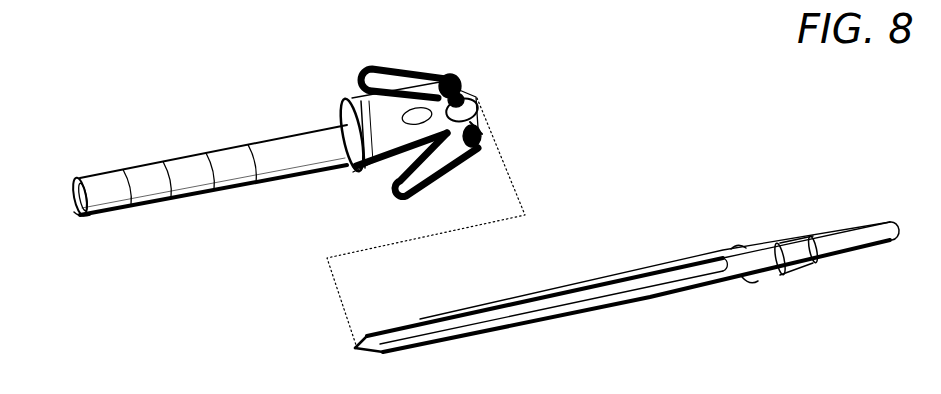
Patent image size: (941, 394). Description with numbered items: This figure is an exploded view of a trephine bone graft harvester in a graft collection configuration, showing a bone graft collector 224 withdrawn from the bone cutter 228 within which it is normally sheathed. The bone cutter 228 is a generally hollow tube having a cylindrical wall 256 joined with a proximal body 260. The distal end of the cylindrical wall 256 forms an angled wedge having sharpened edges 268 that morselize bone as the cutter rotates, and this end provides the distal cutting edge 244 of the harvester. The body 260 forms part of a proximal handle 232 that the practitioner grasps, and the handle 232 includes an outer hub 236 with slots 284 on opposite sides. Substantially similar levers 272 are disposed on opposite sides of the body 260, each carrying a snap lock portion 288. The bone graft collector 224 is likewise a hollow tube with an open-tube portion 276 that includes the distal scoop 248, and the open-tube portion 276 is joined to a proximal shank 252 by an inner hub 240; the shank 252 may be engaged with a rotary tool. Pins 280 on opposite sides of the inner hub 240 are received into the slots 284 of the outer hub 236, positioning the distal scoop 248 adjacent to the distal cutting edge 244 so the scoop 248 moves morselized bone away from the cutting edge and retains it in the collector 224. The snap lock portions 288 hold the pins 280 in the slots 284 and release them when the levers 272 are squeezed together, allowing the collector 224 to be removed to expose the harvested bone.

The bone graft collector 224 is at (627, 282).
The bone cutter 228 is at (294, 144).
The proximal handle 232 is at (459, 72).
The outer hub 236 is at (478, 104).
The inner hub 240 is at (775, 271).
The distal cutting edge 244 is at (73, 207).
The distal scoop 248 is at (358, 345).
The proximal shank 252 is at (853, 230).
The cylindrical wall 256 is at (157, 177).
The proximal body 260 is at (358, 168).
The sharpened edges 268 is at (76, 213).
The levers 272 is at (390, 70).
The open-tube portion 276 is at (543, 315).
The pins 280 is at (738, 245).
The slots 284 is at (478, 133).
The snap lock portion 288 is at (465, 83).